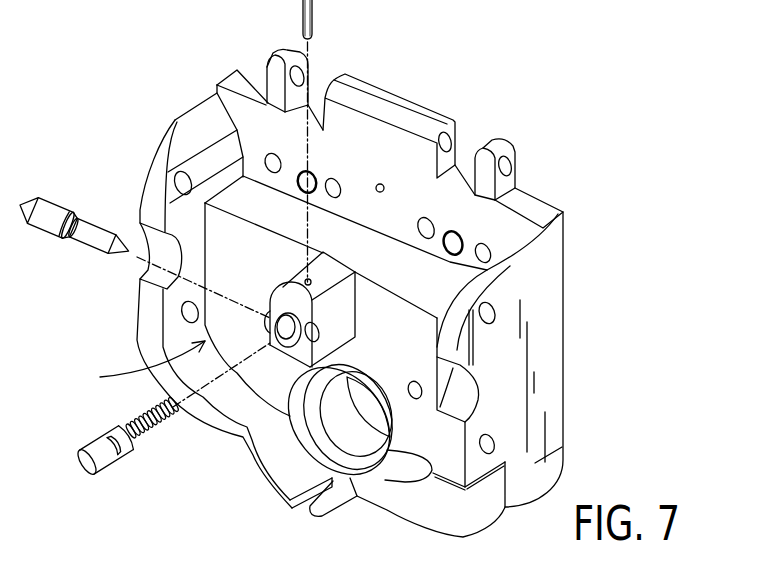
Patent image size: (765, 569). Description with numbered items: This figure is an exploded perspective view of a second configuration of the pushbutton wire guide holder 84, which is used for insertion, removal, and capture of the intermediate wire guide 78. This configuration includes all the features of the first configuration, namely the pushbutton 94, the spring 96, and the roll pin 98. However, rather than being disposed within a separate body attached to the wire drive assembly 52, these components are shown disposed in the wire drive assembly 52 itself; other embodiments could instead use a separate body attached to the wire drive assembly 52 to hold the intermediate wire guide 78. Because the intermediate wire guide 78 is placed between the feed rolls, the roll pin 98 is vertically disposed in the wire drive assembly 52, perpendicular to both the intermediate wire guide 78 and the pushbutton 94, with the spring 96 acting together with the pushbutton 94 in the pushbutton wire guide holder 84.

The wire drive assembly 52 is at (521, 237).
The intermediate wire guide 78 is at (97, 256).
The pushbutton wire guide holder 84 is at (131, 367).
The pushbutton 94 is at (92, 440).
The spring 96 is at (160, 437).
The roll pin 98 is at (313, 8).